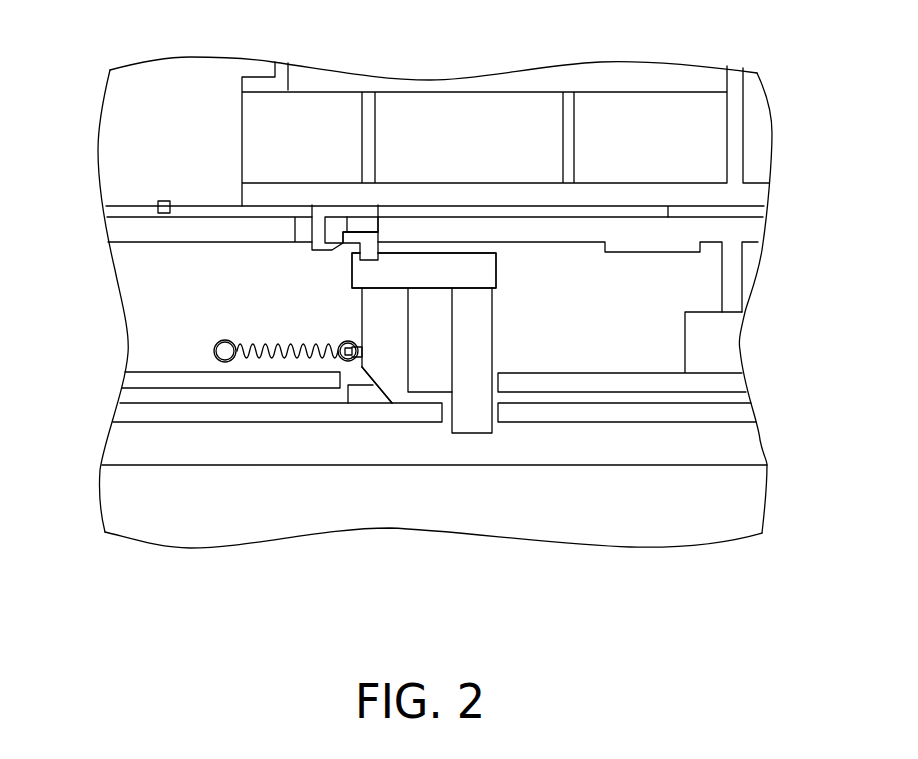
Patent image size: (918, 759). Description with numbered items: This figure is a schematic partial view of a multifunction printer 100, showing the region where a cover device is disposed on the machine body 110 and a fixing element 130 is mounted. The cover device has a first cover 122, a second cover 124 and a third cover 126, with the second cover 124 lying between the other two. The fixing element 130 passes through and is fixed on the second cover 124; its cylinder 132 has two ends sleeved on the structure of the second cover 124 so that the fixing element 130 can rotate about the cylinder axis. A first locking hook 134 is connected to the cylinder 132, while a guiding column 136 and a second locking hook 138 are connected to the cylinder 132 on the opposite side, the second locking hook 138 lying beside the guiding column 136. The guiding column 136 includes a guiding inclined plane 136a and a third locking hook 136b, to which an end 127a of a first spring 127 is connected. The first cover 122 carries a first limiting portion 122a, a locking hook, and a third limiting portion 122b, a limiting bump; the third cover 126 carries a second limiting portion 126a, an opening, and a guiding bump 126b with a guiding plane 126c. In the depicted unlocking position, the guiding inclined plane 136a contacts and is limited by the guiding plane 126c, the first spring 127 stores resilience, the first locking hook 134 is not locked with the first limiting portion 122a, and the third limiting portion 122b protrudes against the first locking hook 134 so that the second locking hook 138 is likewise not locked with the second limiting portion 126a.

The multifunction printer 100 is at (714, 578).
The machine body 110 is at (147, 508).
The first cover 122 is at (326, 108).
The first limiting portion 122a is at (317, 232).
The third limiting portion 122b is at (363, 218).
The second cover 124 is at (128, 231).
The third cover 126 is at (634, 413).
The second limiting portion 126a is at (444, 412).
The guiding bump 126b is at (377, 398).
The guiding plane 126c is at (388, 391).
The first spring 127 is at (277, 342).
The end of the first spring 127a is at (346, 339).
The fixing element 130 is at (472, 250).
The cylinder 132 is at (483, 270).
The first locking hook 134 is at (372, 248).
The guiding column 136 is at (301, 507).
The guiding inclined plane 136a is at (369, 385).
The third locking hook 136b is at (372, 378).
The second locking hook 138 is at (480, 335).